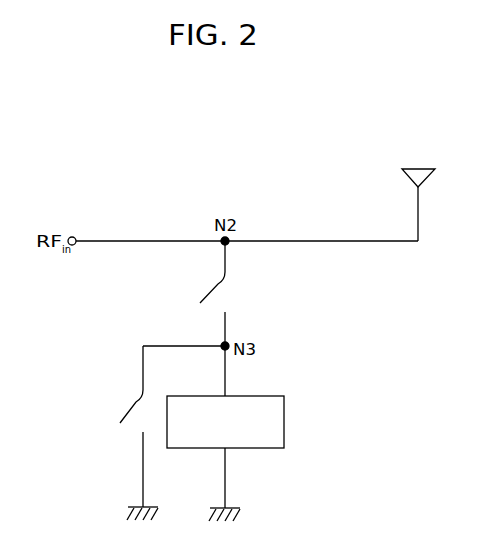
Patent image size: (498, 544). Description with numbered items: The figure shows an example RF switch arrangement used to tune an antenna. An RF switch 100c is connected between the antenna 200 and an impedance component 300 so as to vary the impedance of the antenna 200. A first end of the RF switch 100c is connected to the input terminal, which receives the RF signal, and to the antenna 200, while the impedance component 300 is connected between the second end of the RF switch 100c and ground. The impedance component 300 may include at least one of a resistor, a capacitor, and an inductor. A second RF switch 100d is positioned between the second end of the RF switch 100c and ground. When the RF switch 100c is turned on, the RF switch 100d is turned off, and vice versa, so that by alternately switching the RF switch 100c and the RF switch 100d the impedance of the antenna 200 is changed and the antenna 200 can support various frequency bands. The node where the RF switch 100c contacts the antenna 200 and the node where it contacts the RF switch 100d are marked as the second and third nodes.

The antenna 200 is at (435, 180).
The RF switch 100c is at (208, 289).
The RF switch 100d is at (128, 404).
The impedance component 300 is at (285, 409).